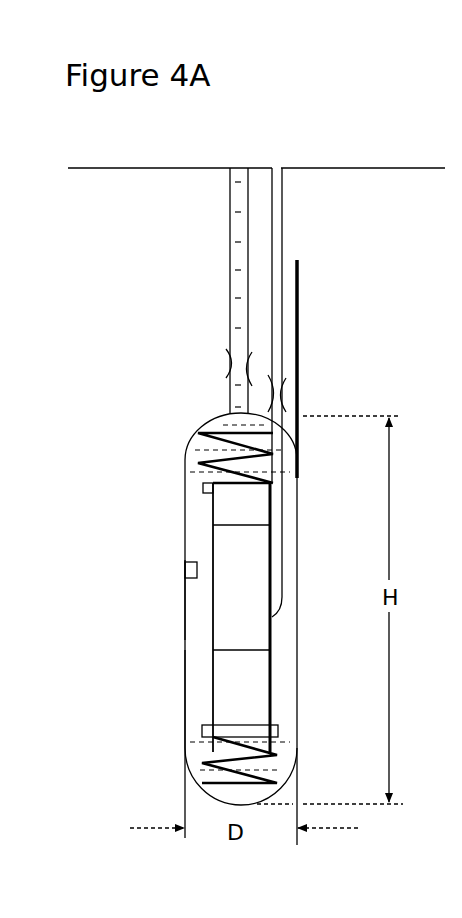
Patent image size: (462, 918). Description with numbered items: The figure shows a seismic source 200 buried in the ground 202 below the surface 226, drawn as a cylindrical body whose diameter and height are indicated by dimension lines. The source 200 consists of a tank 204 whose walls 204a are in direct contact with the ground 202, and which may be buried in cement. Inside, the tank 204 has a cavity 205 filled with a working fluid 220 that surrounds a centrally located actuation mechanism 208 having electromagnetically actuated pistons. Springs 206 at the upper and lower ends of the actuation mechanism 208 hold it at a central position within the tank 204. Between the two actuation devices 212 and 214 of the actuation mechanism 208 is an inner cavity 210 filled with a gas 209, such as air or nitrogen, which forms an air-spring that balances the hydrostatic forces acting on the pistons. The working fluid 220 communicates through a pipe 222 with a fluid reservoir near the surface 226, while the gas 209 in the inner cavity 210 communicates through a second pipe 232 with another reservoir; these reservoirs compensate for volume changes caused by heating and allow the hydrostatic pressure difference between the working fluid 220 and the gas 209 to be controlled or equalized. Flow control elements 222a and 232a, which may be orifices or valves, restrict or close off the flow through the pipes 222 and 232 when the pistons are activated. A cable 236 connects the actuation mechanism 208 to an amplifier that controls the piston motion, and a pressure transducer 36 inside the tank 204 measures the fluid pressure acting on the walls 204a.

The seismic source 200 is at (193, 147).
The ground 202 is at (178, 289).
The surface 226 is at (335, 168).
The pipe 222 is at (230, 213).
The flow control element 222a is at (232, 370).
The pipe 232 is at (282, 228).
The flow control element 232a is at (285, 393).
The cable 236 is at (297, 322).
The tank 204 is at (183, 517).
The walls 204a is at (185, 608).
The working fluid 220 is at (197, 673).
The springs 206 is at (229, 431).
The actuation mechanism 208 is at (209, 514).
The inner cavity 210 is at (248, 616).
The actuation device 214 is at (242, 535).
The gas 209 is at (260, 576).
The pressure transducer 36 is at (185, 568).
The cavity 205 is at (283, 647).
The actuation device 212 is at (249, 690).